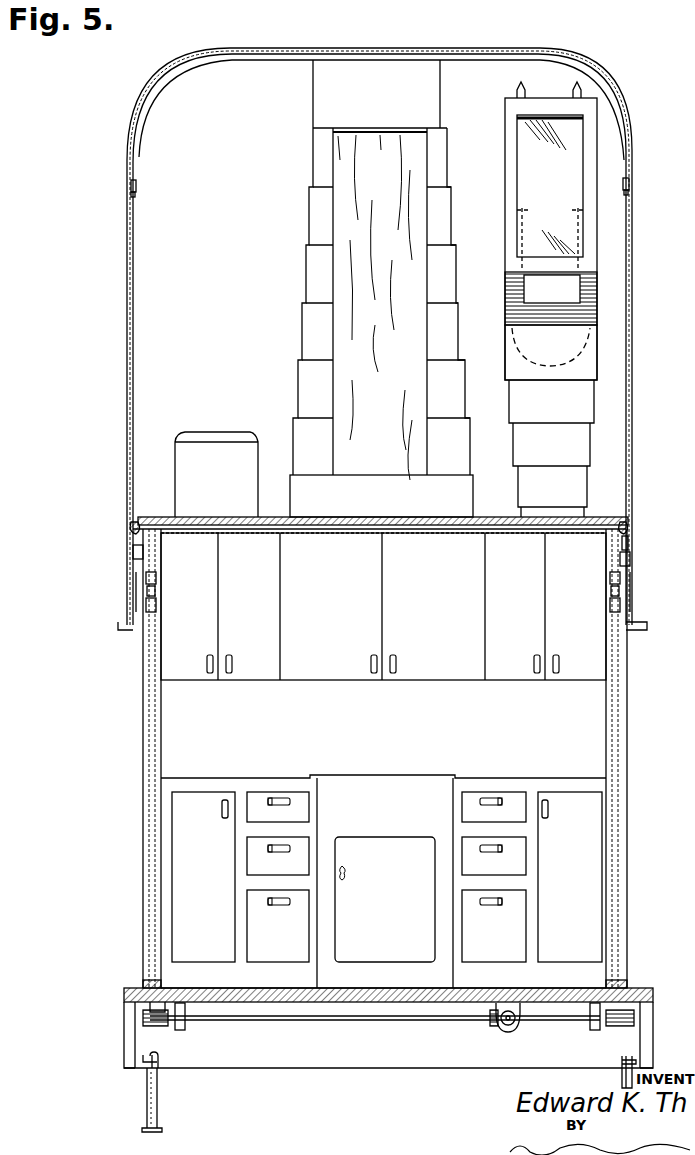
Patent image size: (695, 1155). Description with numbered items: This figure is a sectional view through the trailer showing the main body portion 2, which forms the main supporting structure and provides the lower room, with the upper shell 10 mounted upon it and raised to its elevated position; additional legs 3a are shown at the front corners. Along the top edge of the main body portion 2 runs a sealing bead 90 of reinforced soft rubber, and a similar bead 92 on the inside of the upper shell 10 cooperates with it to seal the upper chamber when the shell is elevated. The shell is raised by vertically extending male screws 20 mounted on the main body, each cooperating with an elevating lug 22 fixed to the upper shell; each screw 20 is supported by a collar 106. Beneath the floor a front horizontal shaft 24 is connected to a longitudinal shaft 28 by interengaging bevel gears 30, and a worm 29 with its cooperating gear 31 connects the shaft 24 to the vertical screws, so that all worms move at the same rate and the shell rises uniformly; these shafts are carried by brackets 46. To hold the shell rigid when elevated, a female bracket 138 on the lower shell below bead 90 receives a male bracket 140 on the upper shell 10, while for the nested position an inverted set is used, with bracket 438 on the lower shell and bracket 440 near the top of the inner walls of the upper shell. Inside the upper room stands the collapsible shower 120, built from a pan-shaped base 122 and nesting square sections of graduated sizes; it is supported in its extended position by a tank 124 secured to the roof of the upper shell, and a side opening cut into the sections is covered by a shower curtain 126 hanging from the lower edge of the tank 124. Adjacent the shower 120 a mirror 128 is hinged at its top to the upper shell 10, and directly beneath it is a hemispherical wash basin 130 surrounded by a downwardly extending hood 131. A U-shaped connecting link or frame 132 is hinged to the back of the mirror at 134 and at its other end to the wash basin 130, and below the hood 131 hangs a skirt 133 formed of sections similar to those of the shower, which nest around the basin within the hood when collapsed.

The upper shell 10 is at (120, 121).
The bracket 440 is at (137, 185).
The tank 124 is at (330, 88).
The collapsible shower 120 is at (294, 281).
The shower curtain 126 is at (365, 208).
The pan-shaped base 122 is at (312, 492).
The mirror 128 is at (568, 231).
The hinge 134 is at (514, 215).
The U-shaped connecting link or frame 132 is at (516, 286).
The hemispherical wash basin 130 is at (568, 345).
The hood 131 is at (512, 357).
The skirt 133 is at (606, 449).
The sealing bead 90 is at (140, 517).
The bead 92 is at (120, 535).
The bracket 438 is at (130, 553).
The female bracket 138 is at (630, 545).
The male bracket 140 is at (632, 560).
The elevating lug 22 is at (158, 604).
The main body portion 2 is at (133, 718).
The male screw 20 is at (148, 831).
The collar 106 is at (148, 984).
The gear 31 is at (168, 1008).
The front horizontal shaft 24 is at (347, 1021).
The worm 29 is at (155, 1028).
The bracket 46 is at (186, 1030).
The bevel gear 30 is at (496, 1028).
The longitudinal shaft 28 is at (511, 1028).
The additional legs 3a is at (145, 1088).